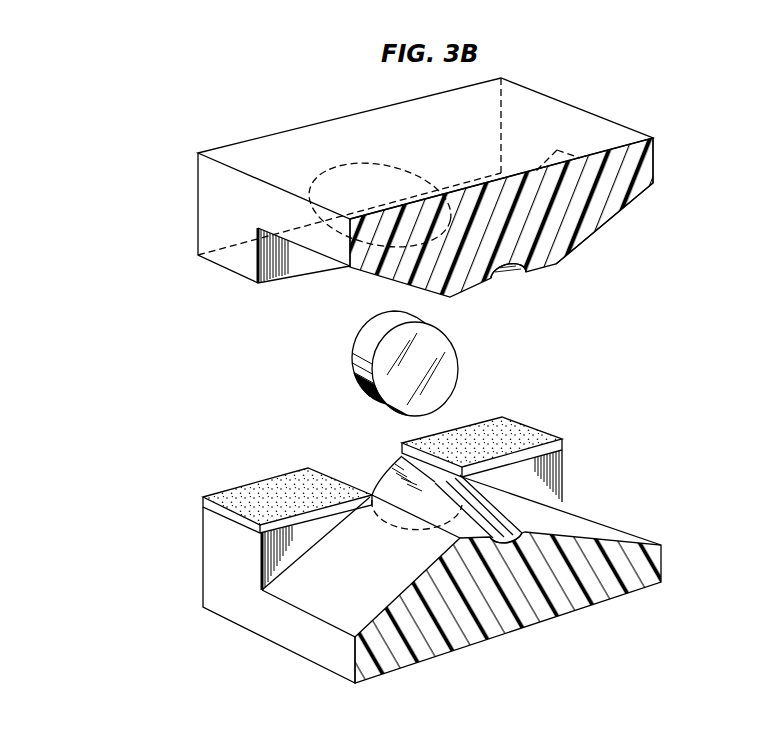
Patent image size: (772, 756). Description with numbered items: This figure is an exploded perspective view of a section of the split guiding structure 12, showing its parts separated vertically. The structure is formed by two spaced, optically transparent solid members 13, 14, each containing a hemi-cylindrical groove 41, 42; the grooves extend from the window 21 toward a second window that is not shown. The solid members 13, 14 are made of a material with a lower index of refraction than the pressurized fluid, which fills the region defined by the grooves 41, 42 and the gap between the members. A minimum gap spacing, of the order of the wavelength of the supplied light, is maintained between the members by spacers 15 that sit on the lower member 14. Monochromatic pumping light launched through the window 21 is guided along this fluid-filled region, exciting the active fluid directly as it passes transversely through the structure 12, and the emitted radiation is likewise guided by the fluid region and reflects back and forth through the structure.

The split guiding structure 12 is at (151, 110).
The solid member 13 is at (432, 196).
The solid member 14 is at (444, 550).
The spacer 15 is at (412, 475).
The window 21 is at (458, 368).
The hemi-cylindrical groove 41 is at (498, 273).
The hemi-cylindrical groove 42 is at (526, 529).